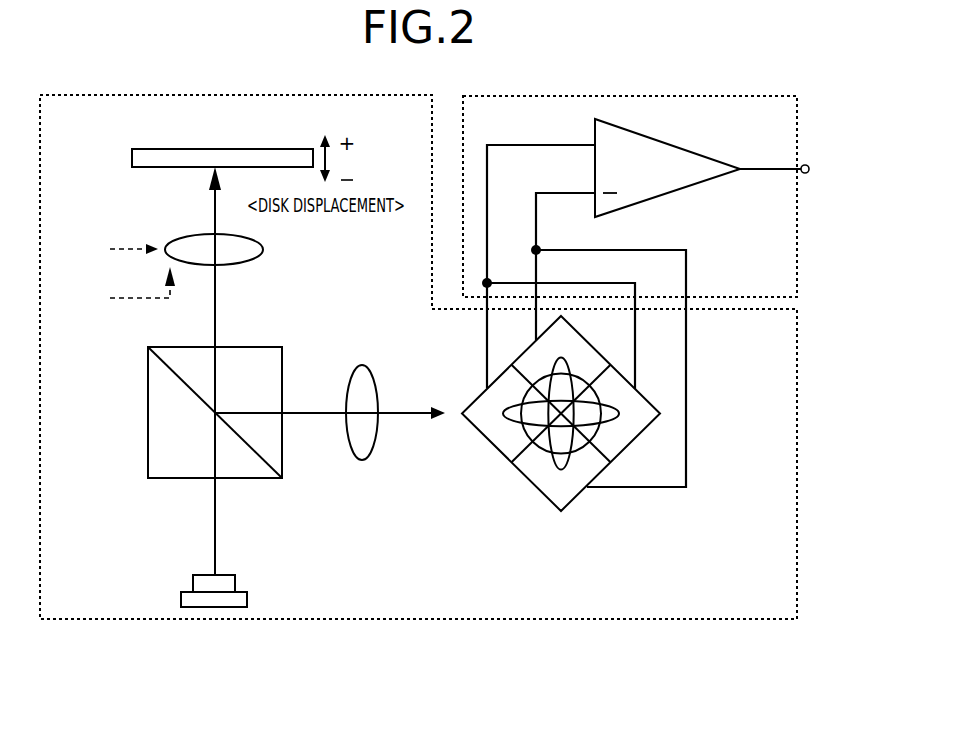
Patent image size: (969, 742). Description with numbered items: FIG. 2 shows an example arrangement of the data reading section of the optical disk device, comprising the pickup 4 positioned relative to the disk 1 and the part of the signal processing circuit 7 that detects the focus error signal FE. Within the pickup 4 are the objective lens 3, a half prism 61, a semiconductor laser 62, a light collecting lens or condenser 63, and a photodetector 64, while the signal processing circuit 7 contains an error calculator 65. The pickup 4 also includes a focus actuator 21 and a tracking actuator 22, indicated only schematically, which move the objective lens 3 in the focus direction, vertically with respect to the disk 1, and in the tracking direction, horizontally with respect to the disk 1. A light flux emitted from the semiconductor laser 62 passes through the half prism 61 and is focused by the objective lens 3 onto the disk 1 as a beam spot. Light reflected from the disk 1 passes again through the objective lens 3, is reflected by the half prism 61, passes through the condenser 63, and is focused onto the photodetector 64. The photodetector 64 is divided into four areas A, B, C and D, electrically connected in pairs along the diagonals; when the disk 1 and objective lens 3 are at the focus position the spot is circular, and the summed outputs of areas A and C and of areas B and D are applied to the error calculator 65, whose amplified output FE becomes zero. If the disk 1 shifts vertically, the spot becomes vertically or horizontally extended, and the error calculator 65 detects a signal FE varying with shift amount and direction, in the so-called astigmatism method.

The disk 1 is at (222, 149).
The objective lens 3 is at (250, 263).
The pickup 4 is at (797, 463).
The signal processing circuit 7 is at (798, 262).
The focus actuator 21 is at (118, 288).
The tracking actuator 22 is at (110, 250).
The half prism 61 is at (252, 478).
The semiconductor laser 62 is at (247, 597).
The condenser 63 is at (360, 460).
The photodetector 64 is at (575, 500).
The error calculator 65 is at (683, 188).